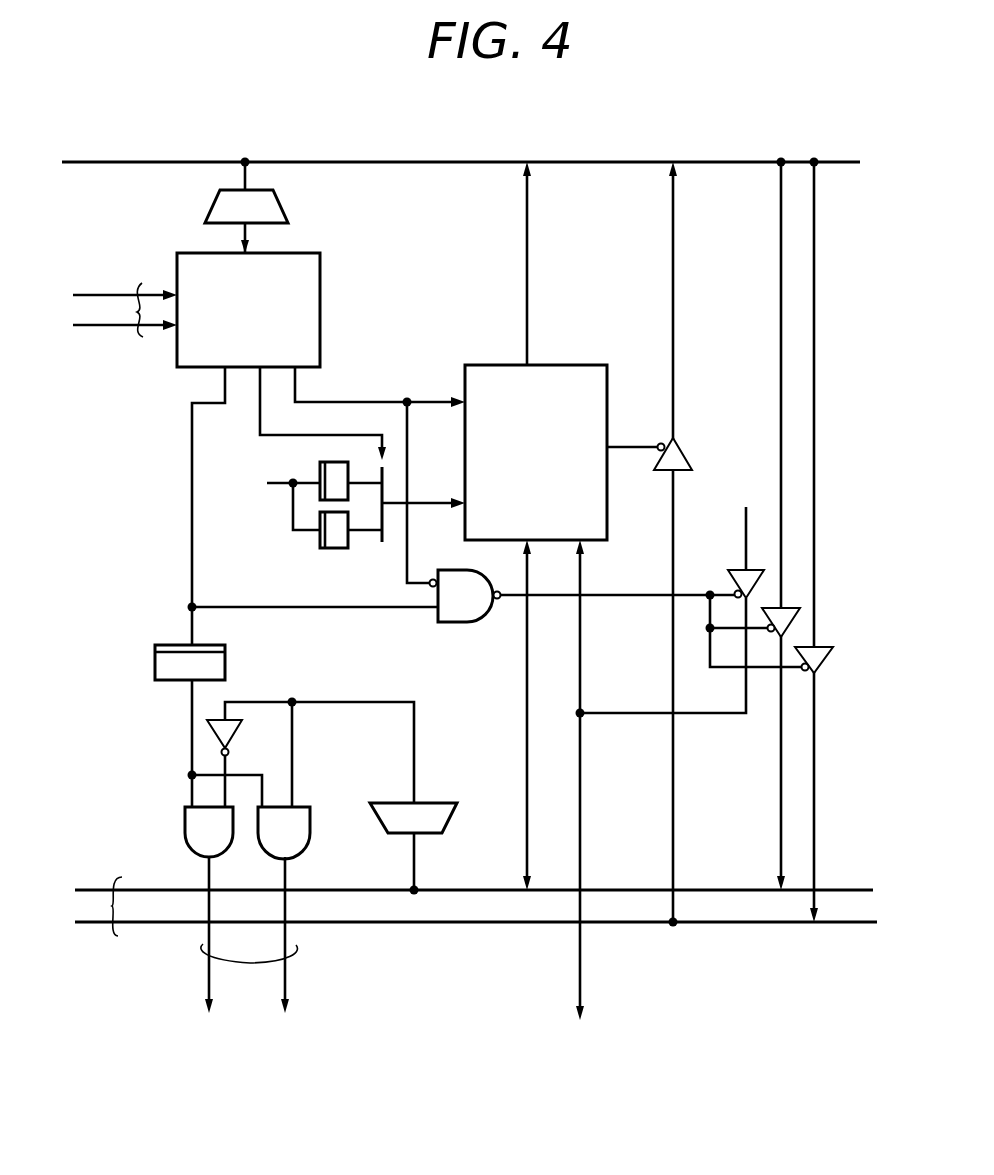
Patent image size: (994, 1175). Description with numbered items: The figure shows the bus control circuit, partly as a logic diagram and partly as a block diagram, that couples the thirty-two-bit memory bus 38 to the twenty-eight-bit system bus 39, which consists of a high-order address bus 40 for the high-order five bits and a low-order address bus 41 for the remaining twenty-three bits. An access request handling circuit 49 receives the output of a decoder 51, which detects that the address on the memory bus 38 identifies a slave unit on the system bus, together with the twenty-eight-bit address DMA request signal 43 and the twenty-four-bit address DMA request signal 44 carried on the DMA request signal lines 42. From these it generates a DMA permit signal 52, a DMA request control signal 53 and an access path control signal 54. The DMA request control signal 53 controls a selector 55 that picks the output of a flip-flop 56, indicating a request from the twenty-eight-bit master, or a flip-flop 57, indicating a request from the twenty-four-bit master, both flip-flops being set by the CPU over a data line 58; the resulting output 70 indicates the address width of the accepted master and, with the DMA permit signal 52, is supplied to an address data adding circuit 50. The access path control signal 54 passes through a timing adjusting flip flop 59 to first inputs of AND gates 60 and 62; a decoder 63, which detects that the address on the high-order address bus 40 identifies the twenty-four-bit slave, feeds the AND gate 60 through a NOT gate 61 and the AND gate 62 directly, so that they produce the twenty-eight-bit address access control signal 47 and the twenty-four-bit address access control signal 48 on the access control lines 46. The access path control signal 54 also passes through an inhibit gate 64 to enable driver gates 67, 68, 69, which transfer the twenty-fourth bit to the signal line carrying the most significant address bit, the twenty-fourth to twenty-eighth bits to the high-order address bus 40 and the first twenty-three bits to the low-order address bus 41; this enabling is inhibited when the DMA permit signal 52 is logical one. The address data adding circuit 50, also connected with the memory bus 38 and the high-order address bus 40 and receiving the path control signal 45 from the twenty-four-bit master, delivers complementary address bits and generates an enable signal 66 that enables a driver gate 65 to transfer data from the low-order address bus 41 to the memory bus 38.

The memory bus 38 is at (126, 160).
The system bus 39 is at (112, 937).
The high-order address bus 40 is at (497, 889).
The low-order address bus 41 is at (502, 925).
The DMA request signal lines 42 is at (140, 283).
The 28-bit address DMA request signal 43 is at (91, 293).
The 24-bit address DMA request signal 44 is at (84, 328).
The path control signal 45 is at (583, 985).
The access control lines 46 is at (298, 950).
The 28-bit address access control signal 47 is at (206, 987).
The 24-bit address access control signal 48 is at (288, 987).
The access request handling circuit 49 is at (322, 262).
The address data adding circuit 50 is at (588, 364).
The decoder 51 is at (288, 203).
The DMA permit signal 52 is at (366, 401).
The DMA request control signal 53 is at (258, 424).
The access path control signal 54 is at (190, 536).
The selector 55 is at (380, 545).
The flip-flop 56 is at (320, 470).
The flip-flop 57 is at (331, 550).
The data line 58 is at (268, 486).
The timing adjusting flip flop 59 is at (226, 662).
The AND gate 60 is at (185, 822).
The NOT gate 61 is at (240, 735).
The AND gate 62 is at (310, 820).
The decoder 63 is at (420, 802).
The inhibit gate 64 is at (478, 623).
The driver gate 65 is at (686, 446).
The enable signal 66 is at (633, 445).
The driver gate 67 is at (739, 571).
The driver gate 68 is at (800, 621).
The driver gate 69 is at (830, 664).
The output 70 is at (434, 502).